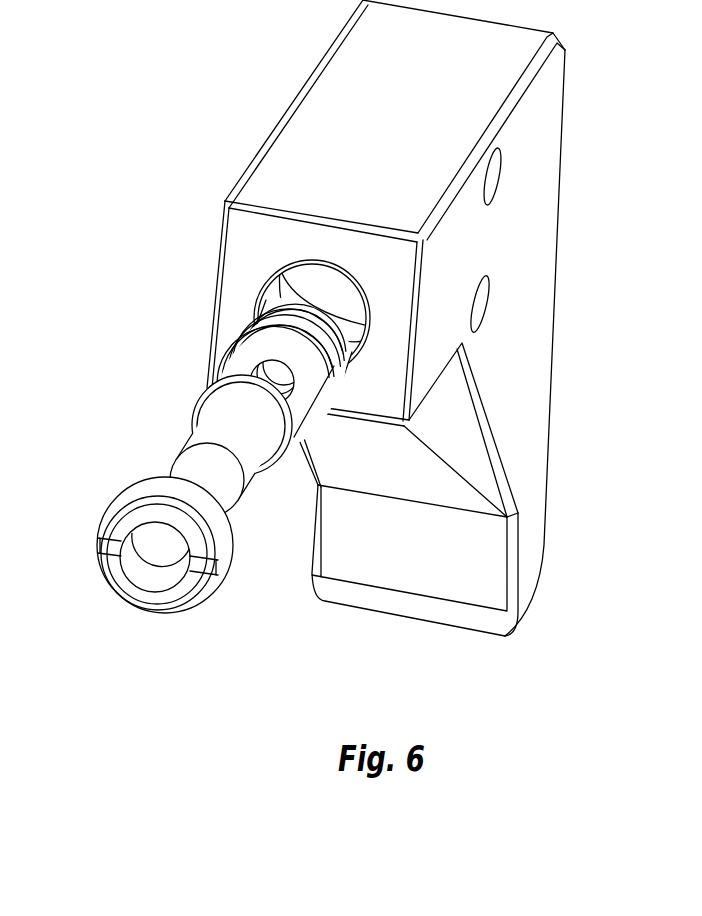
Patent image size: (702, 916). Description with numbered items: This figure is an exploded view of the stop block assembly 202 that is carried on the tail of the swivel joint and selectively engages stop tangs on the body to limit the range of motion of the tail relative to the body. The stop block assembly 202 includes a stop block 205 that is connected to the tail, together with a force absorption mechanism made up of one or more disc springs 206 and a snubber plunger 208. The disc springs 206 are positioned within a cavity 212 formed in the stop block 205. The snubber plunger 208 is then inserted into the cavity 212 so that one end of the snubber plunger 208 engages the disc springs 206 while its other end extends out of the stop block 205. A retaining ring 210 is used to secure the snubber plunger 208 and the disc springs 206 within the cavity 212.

The stop block assembly 202 is at (295, 318).
The stop block 205 is at (332, 98).
The disc springs 206 is at (340, 360).
The snubber plunger 208 is at (208, 425).
The retaining ring 210 is at (122, 510).
The cavity 212 is at (333, 283).